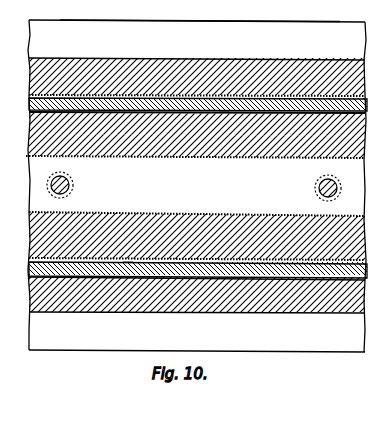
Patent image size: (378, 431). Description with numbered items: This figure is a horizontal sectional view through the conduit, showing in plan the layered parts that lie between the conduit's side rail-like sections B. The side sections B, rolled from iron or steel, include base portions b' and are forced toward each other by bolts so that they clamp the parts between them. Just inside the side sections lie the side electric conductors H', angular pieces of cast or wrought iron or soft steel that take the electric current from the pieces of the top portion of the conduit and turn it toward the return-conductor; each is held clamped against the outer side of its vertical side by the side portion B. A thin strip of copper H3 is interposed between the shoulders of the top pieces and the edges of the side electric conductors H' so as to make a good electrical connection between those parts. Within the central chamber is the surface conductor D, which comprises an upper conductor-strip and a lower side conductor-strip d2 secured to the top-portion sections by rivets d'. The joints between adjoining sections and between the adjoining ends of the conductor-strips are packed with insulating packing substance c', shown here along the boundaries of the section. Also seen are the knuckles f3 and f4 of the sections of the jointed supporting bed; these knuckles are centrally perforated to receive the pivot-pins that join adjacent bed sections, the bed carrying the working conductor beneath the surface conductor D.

The side rail-like section B is at (194, 57).
The base portion b' is at (200, 29).
The side electric conductor H' is at (185, 187).
The strip of copper H3 is at (218, 112).
The knuckle f4 is at (186, 124).
The knuckle f3 is at (185, 146).
The surface conductor D is at (197, 186).
The lower side conductor-strip d2 is at (240, 185).
The insulating packing substance c' is at (195, 186).
The rivet d' is at (203, 184).